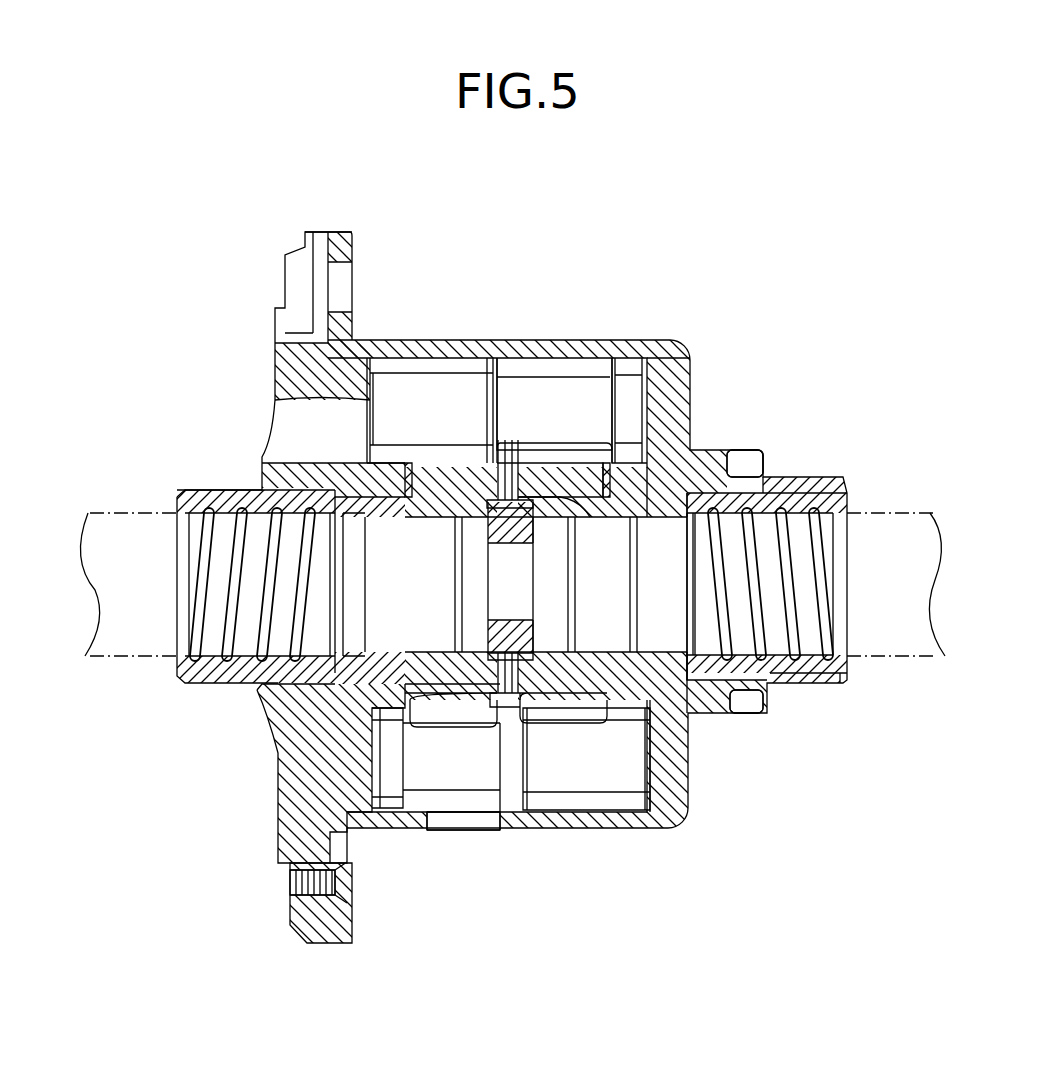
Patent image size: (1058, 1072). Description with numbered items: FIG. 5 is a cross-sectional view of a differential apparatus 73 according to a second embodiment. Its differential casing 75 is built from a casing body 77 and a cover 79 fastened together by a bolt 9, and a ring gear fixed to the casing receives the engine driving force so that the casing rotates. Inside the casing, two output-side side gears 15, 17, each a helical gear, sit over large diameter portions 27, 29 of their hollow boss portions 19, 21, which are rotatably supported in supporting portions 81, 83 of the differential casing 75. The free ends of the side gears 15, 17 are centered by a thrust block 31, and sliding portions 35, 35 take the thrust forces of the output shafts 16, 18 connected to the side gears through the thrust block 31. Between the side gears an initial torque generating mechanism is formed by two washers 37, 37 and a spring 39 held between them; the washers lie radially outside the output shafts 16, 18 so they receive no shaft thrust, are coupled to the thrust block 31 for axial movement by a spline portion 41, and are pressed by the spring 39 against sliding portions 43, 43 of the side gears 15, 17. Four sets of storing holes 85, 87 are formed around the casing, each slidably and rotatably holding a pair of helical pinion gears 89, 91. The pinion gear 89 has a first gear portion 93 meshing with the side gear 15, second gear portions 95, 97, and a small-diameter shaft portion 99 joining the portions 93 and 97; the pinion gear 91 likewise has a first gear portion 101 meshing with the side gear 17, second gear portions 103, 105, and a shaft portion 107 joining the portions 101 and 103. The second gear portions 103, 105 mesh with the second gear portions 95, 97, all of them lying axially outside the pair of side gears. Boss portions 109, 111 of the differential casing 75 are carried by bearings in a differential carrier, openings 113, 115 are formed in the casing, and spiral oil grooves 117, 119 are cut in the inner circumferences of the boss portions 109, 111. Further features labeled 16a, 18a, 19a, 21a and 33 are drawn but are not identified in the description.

The bolt 9 is at (350, 887).
The side gear 15 is at (425, 710).
The output shaft 16 is at (117, 485).
The shaft end 16a is at (240, 698).
The side gear 17 is at (552, 455).
The output shaft 18 is at (920, 490).
The shaft end 18a is at (777, 687).
The boss portion 19 is at (391, 518).
The sleeve end face 19a is at (335, 525).
The boss portion 21 is at (660, 465).
The groove 21a is at (703, 507).
The large diameter portion 27 is at (493, 647).
The large diameter portion 29 is at (537, 633).
The thrust block 31 is at (505, 607).
The bearing 33 is at (400, 430).
The sliding portion 35 is at (473, 518).
The washer 37 is at (492, 500).
The spring 39 is at (493, 433).
The spline portion 41 is at (518, 620).
The sliding portion 43 is at (497, 700).
The differential apparatus 73 is at (708, 286).
The differential casing 75 is at (327, 232).
The casing body 77 is at (597, 340).
The cover 79 is at (283, 320).
The supporting portion 81 is at (278, 725).
The supporting portion 83 is at (717, 713).
The storing hole 85 is at (518, 363).
The storing hole 87 is at (527, 807).
The pinion gear 89 is at (648, 345).
The pinion gear 91 is at (682, 826).
The first gear portion 93 is at (449, 367).
The second gear portion 95 is at (383, 368).
The second gear portion 97 is at (633, 363).
The shaft portion 99 is at (555, 417).
The first gear portion 101 is at (582, 803).
The second gear portion 103 is at (392, 807).
The second gear portion 105 is at (630, 803).
The shaft portion 107 is at (424, 783).
The boss portion 109 is at (257, 457).
The boss portion 111 is at (803, 480).
The opening 113 is at (305, 400).
The opening 115 is at (440, 820).
The oil groove 117 is at (212, 549).
The oil groove 119 is at (808, 557).